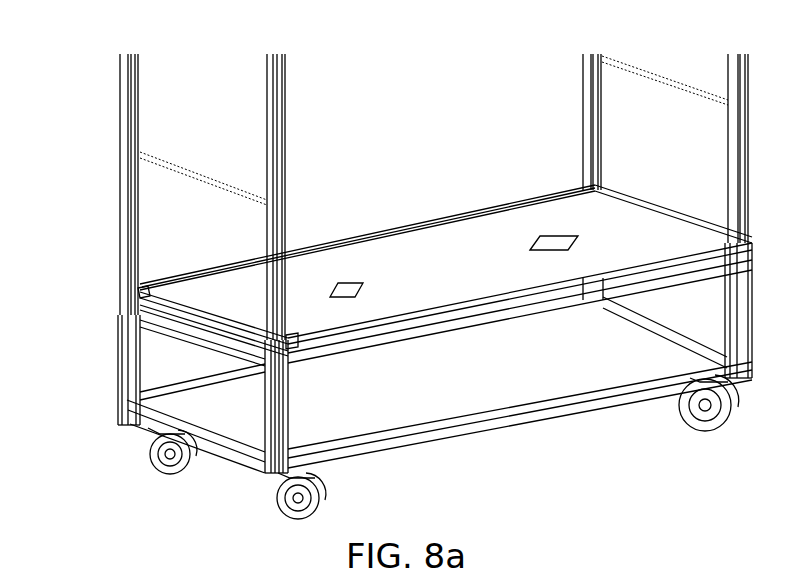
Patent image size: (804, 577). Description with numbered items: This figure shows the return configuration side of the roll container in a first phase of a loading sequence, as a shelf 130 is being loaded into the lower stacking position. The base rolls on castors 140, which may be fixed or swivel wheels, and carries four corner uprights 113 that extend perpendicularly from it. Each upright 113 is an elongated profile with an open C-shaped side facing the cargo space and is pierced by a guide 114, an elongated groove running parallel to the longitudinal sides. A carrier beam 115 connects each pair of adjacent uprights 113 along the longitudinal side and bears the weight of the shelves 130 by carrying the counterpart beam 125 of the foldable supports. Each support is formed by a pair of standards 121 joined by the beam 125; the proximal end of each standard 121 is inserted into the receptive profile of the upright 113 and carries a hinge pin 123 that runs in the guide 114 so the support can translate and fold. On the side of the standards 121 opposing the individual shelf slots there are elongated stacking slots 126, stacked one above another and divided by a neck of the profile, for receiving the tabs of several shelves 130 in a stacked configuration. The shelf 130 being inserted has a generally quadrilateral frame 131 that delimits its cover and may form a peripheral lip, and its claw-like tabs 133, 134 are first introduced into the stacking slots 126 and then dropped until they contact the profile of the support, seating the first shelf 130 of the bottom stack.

The upright 113 is at (122, 403).
The guide 114 is at (135, 370).
The carrier beam 115 is at (137, 327).
The standard 121 is at (130, 208).
The hinge pin 123 is at (137, 354).
The beam 125 is at (137, 310).
The stacking slot 126 is at (135, 88).
The shelf 130 is at (406, 220).
The frame 131 is at (498, 210).
The tab 133 is at (293, 342).
The tab 134 is at (143, 292).
The castor 140 is at (165, 470).